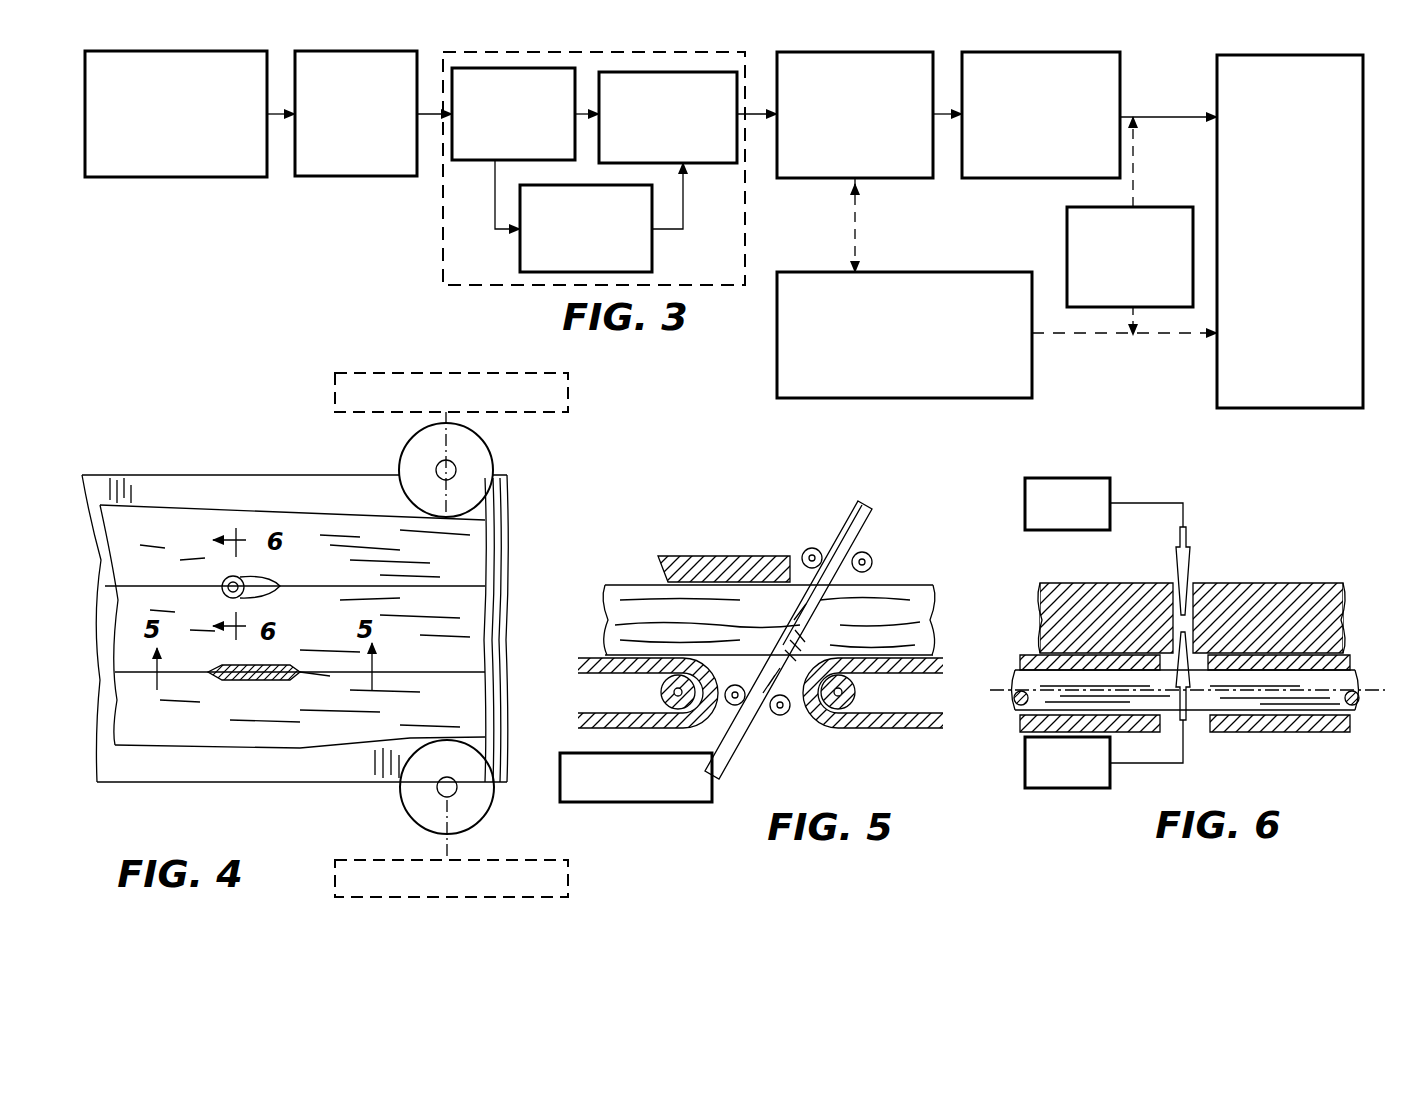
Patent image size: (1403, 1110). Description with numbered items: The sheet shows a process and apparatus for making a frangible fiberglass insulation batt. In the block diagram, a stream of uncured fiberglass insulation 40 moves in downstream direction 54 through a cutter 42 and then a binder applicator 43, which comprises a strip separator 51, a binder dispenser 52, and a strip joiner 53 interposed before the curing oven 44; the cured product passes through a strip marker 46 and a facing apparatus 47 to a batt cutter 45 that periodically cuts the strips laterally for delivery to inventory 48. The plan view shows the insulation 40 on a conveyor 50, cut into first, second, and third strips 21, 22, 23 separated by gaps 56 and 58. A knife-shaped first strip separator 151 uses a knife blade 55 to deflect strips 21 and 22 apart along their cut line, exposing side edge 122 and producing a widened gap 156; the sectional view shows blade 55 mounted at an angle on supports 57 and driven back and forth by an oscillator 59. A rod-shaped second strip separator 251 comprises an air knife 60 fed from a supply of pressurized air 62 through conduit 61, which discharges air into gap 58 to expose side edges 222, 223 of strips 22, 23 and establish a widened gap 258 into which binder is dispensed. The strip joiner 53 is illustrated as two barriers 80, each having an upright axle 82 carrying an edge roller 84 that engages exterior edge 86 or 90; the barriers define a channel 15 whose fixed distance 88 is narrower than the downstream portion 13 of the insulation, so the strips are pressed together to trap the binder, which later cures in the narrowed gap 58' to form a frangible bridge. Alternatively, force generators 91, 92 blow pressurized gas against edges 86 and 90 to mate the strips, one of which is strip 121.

In FIG. 4, the downstream portion 13 is at (272, 740).
In FIG. 4, the channel 15 is at (335, 495).
In FIG. 4, the first strip 21 is at (143, 740).
In FIG. 4, the second strip 22 is at (125, 625).
In FIG. 5, the second strip 22 is at (728, 570).
In FIG. 6, the second strip 22 is at (1080, 598).
In FIG. 4, the third strip 23 is at (137, 520).
In FIG. 6, the third strip 23 is at (1288, 592).
In FIG. 3, the fiberglass insulation 40 is at (207, 178).
In FIG. 4, the fiberglass insulation 40 is at (233, 503).
In FIG. 5, the fiberglass insulation 40 is at (705, 553).
In FIG. 6, the fiberglass insulation 40 is at (1245, 578).
In FIG. 3, the cutter 42 is at (352, 177).
In FIG. 3, the binder applicator 43 is at (441, 214).
In FIG. 3, the curing oven 44 is at (815, 177).
In FIG. 3, the batt cutter 45 is at (1067, 256).
In FIG. 3, the strip marker 46 is at (1047, 178).
In FIG. 3, the facing apparatus 47 is at (959, 272).
In FIG. 3, the inventory 48 is at (1217, 96).
In FIG. 4, the conveyor 50 is at (310, 478).
In FIG. 5, the conveyor 50 is at (608, 690).
In FIG. 6, the conveyor 50 is at (1022, 648).
In FIG. 3, the strip separator 51 is at (485, 160).
In FIG. 3, the binder dispenser 52 is at (520, 262).
In FIG. 3, the strip joiner 53 is at (710, 163).
In FIG. 3, the downstream direction 54 is at (960, 36).
In FIG. 4, the downstream direction 54 is at (374, 450).
In FIG. 5, the downstream direction 54 is at (655, 530).
In FIG. 4, the knife blade 55 is at (237, 664).
In FIG. 5, the knife blade 55 is at (880, 511).
In FIG. 4, the gap 56 is at (186, 673).
In FIG. 5, the supports 57 is at (811, 548).
In FIG. 4, the gap 58 is at (153, 560).
In FIG. 4, the gap 58' is at (443, 559).
In FIG. 5, the oscillator 59 is at (657, 802).
In FIG. 4, the air knife 60 is at (222, 578).
In FIG. 6, the air knife 60 is at (1200, 560).
In FIG. 6, the conduit 61 is at (1142, 512).
In FIG. 6, the supply of pressurized air 62 is at (1025, 512).
In FIG. 4, the barrier 80 is at (500, 462).
In FIG. 4, the upright axle 82 is at (437, 465).
In FIG. 4, the edge roller 84 is at (450, 455).
In FIG. 4, the first exterior edge 86 is at (335, 747).
In FIG. 4, the distance 88 is at (500, 520).
In FIG. 4, the second exterior edge 90 is at (396, 515).
In FIG. 4, the first force generator 91 is at (543, 860).
In FIG. 4, the second force generator 92 is at (335, 400).
In FIG. 4, the strip 121 is at (284, 673).
In FIG. 4, the side edge 122 is at (328, 642).
In FIG. 5, the side edge 122 is at (630, 603).
In FIG. 4, the first strip separator 151 is at (236, 684).
In FIG. 4, the widened gap 156 is at (332, 672).
In FIG. 5, the widened gap 156 is at (900, 615).
In FIG. 4, the side edge 222 is at (275, 582).
In FIG. 4, the side edge 223 is at (307, 500).
In FIG. 4, the second strip separator 251 is at (222, 593).
In FIG. 4, the widened gap 258 is at (265, 580).